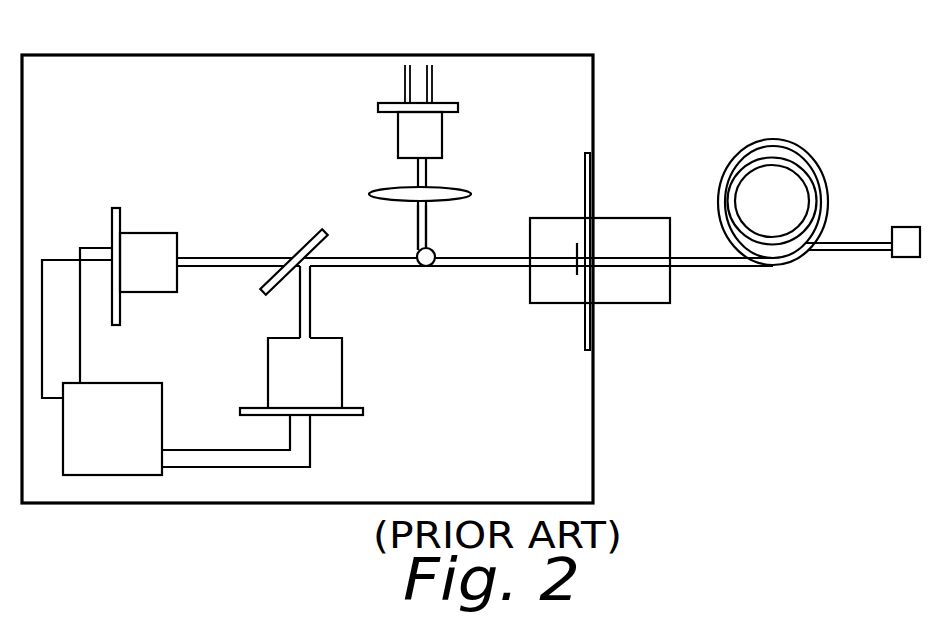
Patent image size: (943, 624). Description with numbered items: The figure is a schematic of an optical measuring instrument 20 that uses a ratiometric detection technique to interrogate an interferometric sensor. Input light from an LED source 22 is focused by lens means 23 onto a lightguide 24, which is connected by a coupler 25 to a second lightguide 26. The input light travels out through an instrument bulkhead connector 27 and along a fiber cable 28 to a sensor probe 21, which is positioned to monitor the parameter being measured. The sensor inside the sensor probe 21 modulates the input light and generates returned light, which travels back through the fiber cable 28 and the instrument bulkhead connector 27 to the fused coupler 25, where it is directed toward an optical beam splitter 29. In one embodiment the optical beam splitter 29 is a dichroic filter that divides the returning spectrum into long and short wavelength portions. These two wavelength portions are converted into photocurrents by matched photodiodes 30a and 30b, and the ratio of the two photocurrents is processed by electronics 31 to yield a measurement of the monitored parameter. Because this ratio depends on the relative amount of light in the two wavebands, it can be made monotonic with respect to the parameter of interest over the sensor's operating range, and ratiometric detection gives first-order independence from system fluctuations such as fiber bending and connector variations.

The optical measuring instrument 20 is at (283, 52).
The sensor probe 21 is at (905, 257).
The LED source 22 is at (398, 133).
The lens means 23 is at (383, 190).
The lightguide 24 is at (418, 229).
The coupler 25 is at (423, 266).
The lightguide 26 is at (481, 268).
The instrument bulkhead connector 27 is at (640, 287).
The fiber cable 28 is at (735, 162).
The optical beam splitter 29 is at (268, 283).
The matched photodiode 30a is at (150, 240).
The matched photodiode 30b is at (325, 371).
The electronics 31 is at (125, 443).